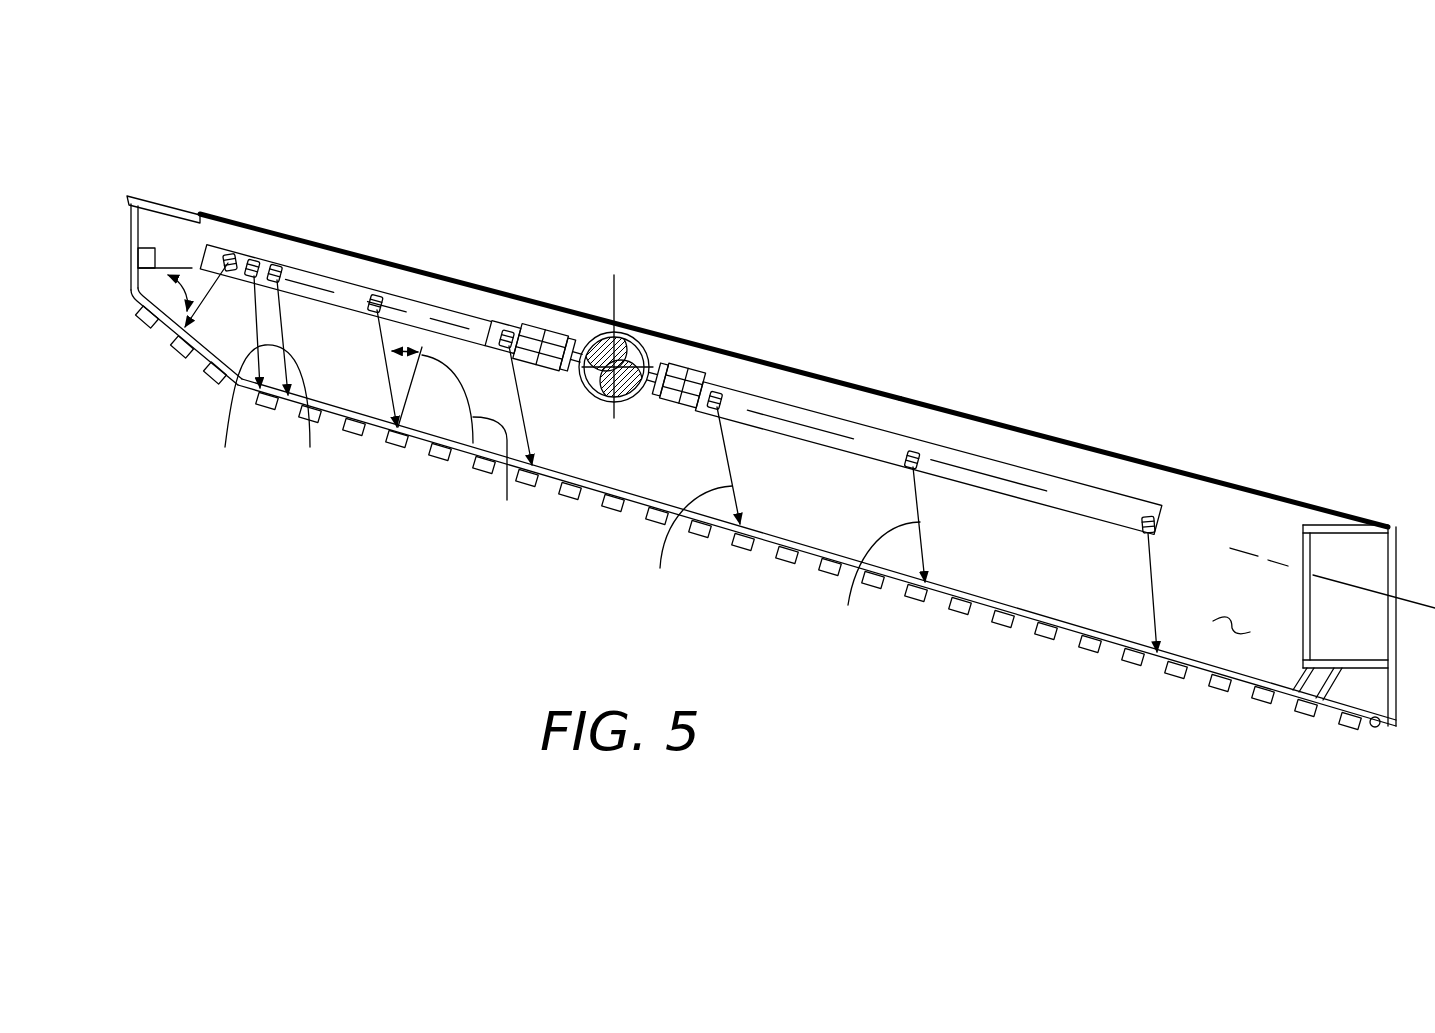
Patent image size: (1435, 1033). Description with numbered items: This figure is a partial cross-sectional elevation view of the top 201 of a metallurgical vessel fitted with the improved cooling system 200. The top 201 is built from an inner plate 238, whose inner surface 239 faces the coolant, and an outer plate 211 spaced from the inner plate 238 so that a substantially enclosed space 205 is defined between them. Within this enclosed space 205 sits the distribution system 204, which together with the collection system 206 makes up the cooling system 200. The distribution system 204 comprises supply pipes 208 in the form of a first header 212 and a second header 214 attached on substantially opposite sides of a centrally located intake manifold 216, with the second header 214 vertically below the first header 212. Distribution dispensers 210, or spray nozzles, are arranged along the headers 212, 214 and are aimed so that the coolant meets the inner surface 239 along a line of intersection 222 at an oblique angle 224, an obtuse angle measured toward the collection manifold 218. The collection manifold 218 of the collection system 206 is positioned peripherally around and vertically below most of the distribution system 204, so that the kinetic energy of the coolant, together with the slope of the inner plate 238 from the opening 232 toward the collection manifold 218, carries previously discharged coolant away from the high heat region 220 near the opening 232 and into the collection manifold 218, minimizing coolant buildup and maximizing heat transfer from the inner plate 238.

The cooling system 200 is at (1245, 522).
The top 201 is at (1070, 274).
The distribution system 204 is at (685, 362).
The enclosed space 205 is at (1230, 631).
The collection system 206 is at (1357, 687).
The supply pipes 208 is at (859, 407).
The distribution dispensers 210 is at (237, 256).
The outer plate 211 is at (1099, 451).
The first header 212 is at (345, 300).
The second header 214 is at (860, 460).
The intake manifold 216 is at (600, 334).
The collection manifold 218 is at (1299, 524).
The high heat region 220 is at (189, 387).
The line of intersection 222 is at (563, 494).
The oblique angle 224 is at (507, 500).
The opening 232 is at (126, 247).
The inner plate 238 is at (630, 519).
The inner surface 239 is at (989, 594).